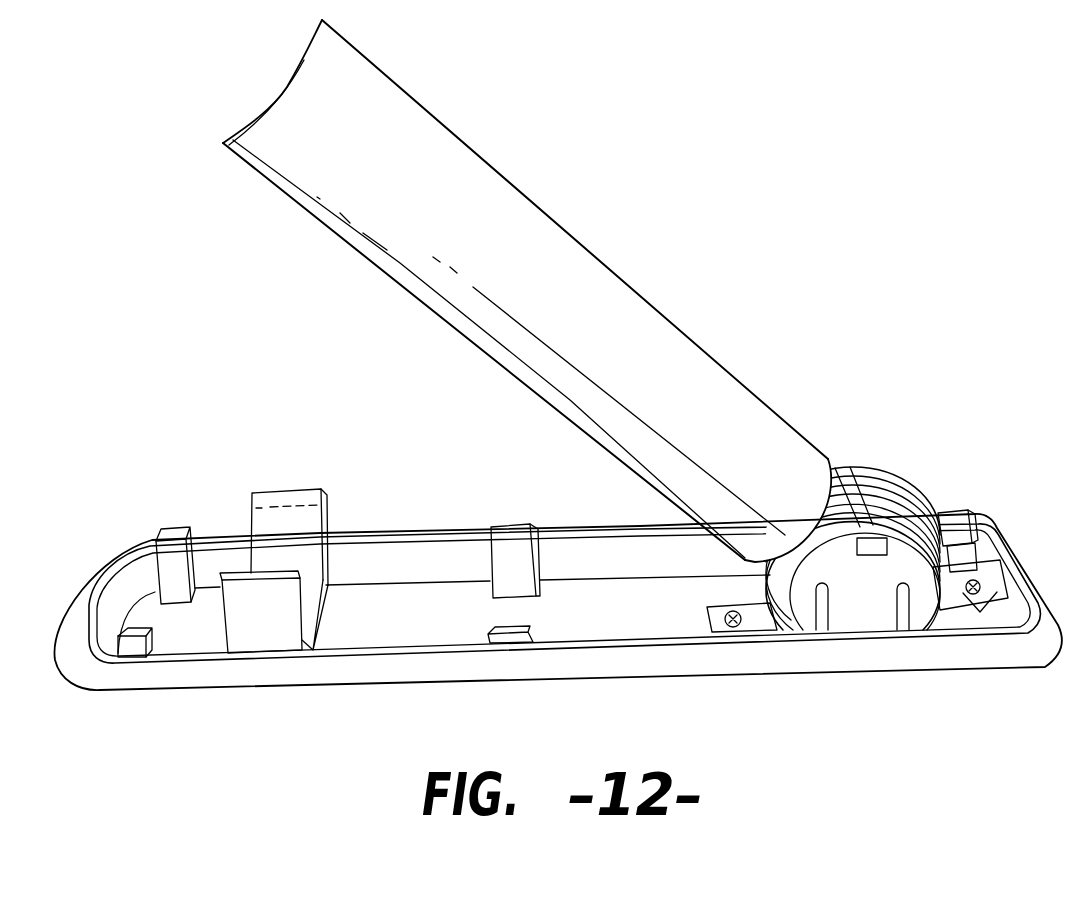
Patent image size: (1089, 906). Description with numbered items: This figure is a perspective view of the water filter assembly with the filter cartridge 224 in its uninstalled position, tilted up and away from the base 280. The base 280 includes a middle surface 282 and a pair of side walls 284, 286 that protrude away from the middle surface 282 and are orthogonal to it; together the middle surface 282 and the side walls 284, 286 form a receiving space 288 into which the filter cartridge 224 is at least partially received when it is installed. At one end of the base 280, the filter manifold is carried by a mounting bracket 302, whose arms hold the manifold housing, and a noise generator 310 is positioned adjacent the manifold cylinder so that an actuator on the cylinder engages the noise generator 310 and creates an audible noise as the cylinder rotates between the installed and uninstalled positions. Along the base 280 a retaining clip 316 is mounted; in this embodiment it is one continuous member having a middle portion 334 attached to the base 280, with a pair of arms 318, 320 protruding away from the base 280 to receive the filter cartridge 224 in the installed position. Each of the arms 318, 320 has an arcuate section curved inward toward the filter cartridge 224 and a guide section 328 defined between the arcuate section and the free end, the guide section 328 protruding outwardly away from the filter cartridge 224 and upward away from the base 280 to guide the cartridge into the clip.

The filter cartridge 224 is at (680, 330).
The base 280 is at (785, 672).
The middle surface 282 is at (427, 613).
The side wall 284 is at (597, 560).
The side wall 286 is at (395, 668).
The receiving space 288 is at (363, 530).
The mounting bracket 302 is at (863, 600).
The noise generator 310 is at (970, 553).
The retaining clip 316 is at (263, 658).
The arm 318 is at (230, 617).
The arm 320 is at (250, 525).
The guide section 328 is at (285, 488).
The middle portion 334 is at (327, 627).